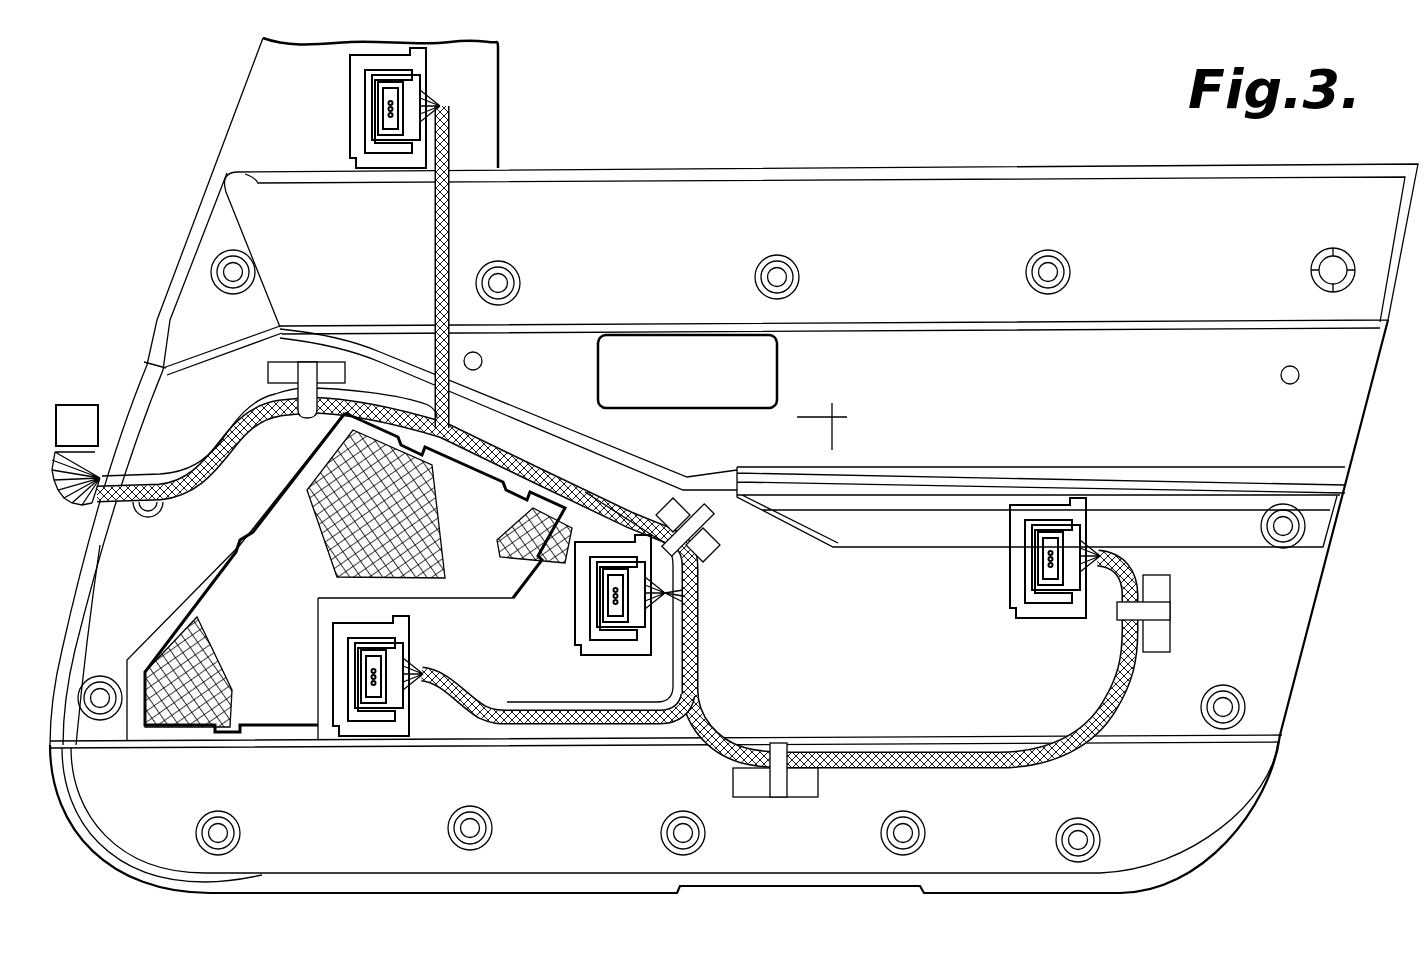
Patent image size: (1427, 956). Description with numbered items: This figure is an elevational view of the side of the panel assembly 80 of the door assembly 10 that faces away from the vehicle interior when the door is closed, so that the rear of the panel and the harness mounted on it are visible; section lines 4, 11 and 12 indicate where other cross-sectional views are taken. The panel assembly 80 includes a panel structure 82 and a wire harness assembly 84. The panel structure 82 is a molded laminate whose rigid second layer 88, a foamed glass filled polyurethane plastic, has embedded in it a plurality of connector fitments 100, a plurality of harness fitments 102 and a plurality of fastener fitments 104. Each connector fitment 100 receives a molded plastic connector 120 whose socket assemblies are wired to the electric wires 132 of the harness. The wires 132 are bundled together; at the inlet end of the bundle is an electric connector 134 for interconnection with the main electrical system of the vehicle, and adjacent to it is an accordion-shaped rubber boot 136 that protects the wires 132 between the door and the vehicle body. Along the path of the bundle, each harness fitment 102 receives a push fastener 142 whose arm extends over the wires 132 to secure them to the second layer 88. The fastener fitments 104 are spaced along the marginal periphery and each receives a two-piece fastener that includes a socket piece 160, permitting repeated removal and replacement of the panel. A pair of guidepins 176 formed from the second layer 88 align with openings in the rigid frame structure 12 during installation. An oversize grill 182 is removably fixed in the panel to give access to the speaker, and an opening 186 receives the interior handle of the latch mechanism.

The door assembly 10 is at (1183, 94).
The panel assembly 80 is at (772, 128).
The panel structure 82 is at (695, 135).
The wire harness assembly 84 is at (450, 416).
The second layer 88 is at (1355, 421).
The connector fitment 100 is at (350, 153).
The harness fitment 102 is at (268, 380).
The fastener fitment 104 is at (540, 243).
The connector 120 is at (368, 115).
The electric wires 132 is at (238, 440).
The electric connector 134 is at (101, 398).
The rubber boot 136 is at (70, 490).
The push fastener 142 is at (322, 360).
The socket piece 160 is at (236, 270).
The guidepin 176 is at (482, 359).
The oversize grill 182 is at (242, 582).
The opening 186 is at (777, 362).
The section line 4- 4 is at (527, 202).
The section line 11- 11 is at (720, 714).
The rigid frame structure 12 is at (423, 785).